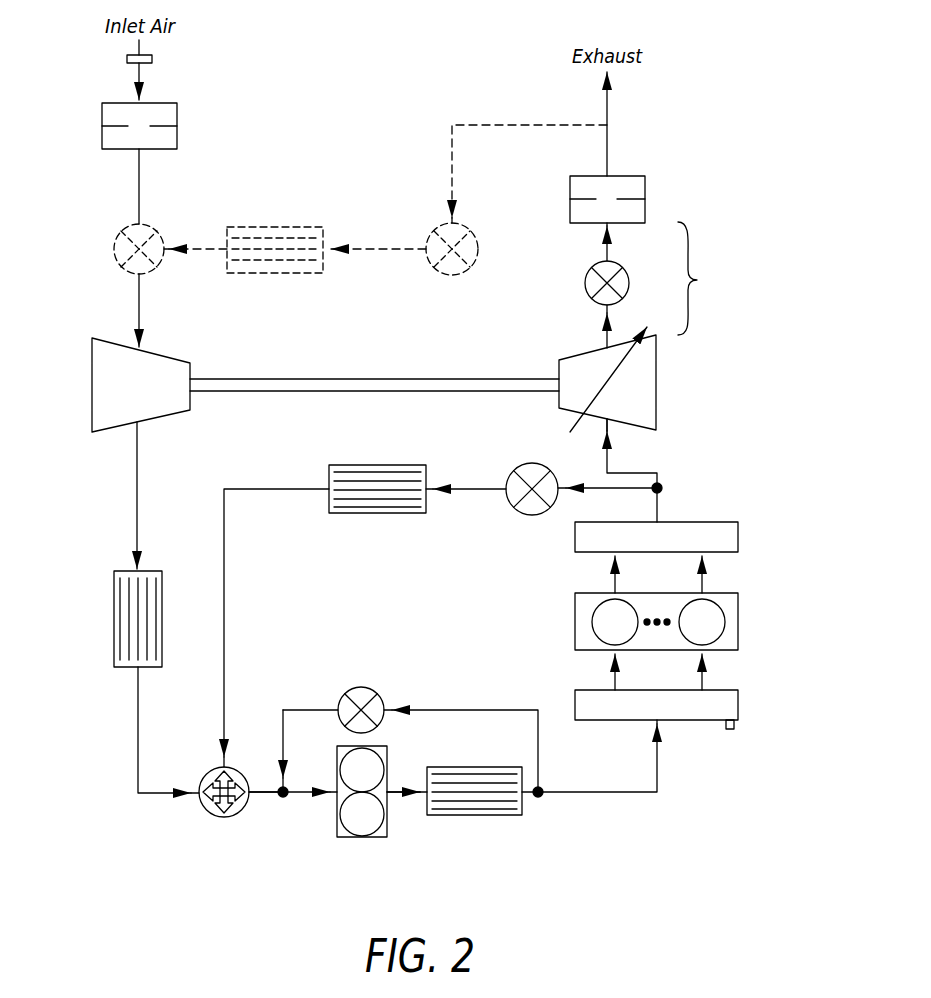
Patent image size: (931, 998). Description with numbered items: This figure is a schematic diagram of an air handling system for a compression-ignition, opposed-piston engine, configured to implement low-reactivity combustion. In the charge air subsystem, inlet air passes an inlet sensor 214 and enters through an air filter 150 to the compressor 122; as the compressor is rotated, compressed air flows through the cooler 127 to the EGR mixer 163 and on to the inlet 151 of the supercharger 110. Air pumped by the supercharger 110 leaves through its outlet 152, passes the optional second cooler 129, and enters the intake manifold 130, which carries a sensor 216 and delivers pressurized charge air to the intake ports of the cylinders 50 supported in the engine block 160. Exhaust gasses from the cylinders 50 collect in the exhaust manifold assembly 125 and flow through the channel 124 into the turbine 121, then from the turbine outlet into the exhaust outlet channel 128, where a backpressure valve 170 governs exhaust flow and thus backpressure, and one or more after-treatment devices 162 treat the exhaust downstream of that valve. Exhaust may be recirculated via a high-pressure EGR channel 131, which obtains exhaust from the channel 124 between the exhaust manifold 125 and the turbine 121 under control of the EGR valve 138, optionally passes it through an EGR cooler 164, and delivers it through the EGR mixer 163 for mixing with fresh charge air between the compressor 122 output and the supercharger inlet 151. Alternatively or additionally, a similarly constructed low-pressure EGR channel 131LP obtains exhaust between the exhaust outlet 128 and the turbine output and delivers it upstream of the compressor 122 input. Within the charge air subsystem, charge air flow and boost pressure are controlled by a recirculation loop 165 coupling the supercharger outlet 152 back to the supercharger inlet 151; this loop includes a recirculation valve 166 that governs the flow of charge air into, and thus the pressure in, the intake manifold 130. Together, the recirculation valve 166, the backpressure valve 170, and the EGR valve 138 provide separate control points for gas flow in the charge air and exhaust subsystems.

The inlet air sensor 214 is at (152, 60).
The air filter 150 is at (177, 112).
The EGR mixer 163 is at (113, 250).
The EGR cooler 164 is at (278, 227).
The EGR valve 138 is at (453, 275).
The low-pressure EGR channel 131LP is at (377, 172).
The high-pressure EGR channel 131 is at (453, 460).
The compressor 122 is at (108, 433).
The turbine 121 is at (657, 403).
The channel 124 is at (607, 462).
The backpressure valve 170 is at (585, 283).
The after-treatment device 162 is at (645, 200).
The exhaust outlet channel 128 is at (709, 278).
The cooler 127 is at (114, 620).
The exhaust manifold assembly 125 is at (738, 537).
The engine block 160 is at (738, 635).
The cylinders 50 is at (592, 622).
The intake manifold 130 is at (738, 705).
The intake manifold sensor 216 is at (730, 729).
The recirculation valve 166 is at (358, 688).
The recirculation loop 165 is at (432, 690).
The supercharger inlet 151 is at (295, 793).
The supercharger 110 is at (363, 838).
The supercharger outlet 152 is at (390, 793).
The second cooler 129 is at (498, 815).